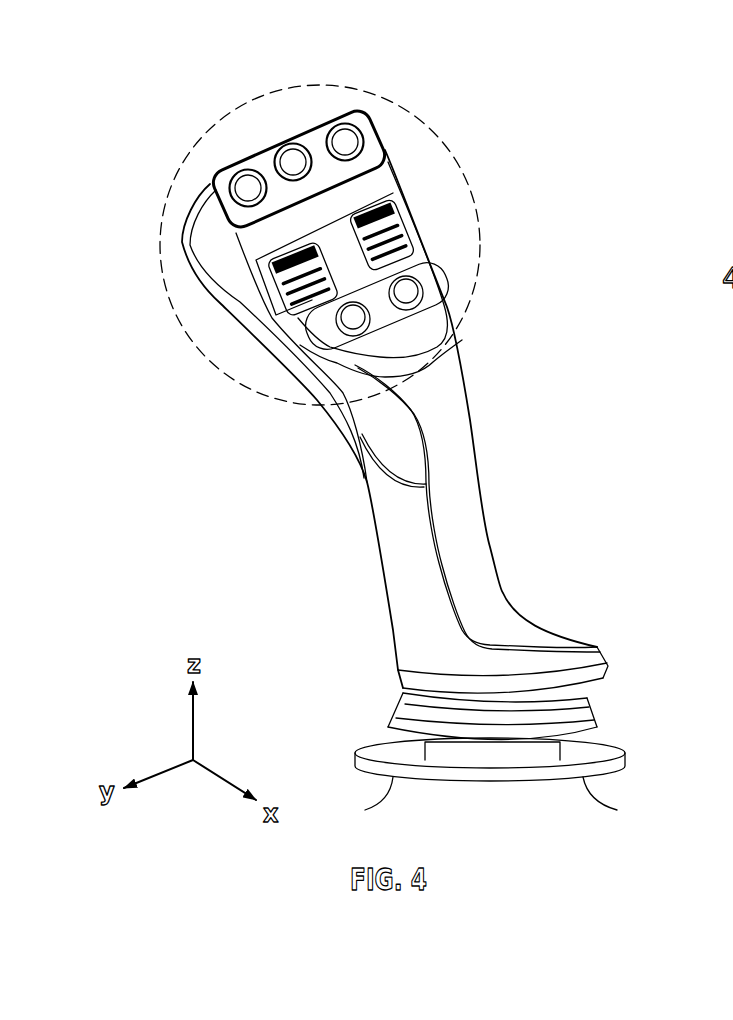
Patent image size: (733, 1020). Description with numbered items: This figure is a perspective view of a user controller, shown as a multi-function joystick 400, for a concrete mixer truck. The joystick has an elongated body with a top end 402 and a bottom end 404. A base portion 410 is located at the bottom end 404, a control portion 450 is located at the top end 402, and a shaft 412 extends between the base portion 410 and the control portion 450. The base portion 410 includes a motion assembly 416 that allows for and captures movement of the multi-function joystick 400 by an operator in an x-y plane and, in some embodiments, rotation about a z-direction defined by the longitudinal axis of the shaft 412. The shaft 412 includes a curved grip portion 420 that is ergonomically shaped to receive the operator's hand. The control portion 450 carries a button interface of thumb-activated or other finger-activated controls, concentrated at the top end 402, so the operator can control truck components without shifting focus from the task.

The multi-function joystick 400 is at (203, 120).
The top end 402 is at (271, 132).
The control portion 450 is at (449, 135).
The shaft 412 is at (505, 473).
The curved grip portion 420 is at (390, 450).
The motion assembly 416 is at (394, 712).
The base portion 410 is at (636, 732).
The bottom end 404 is at (486, 788).